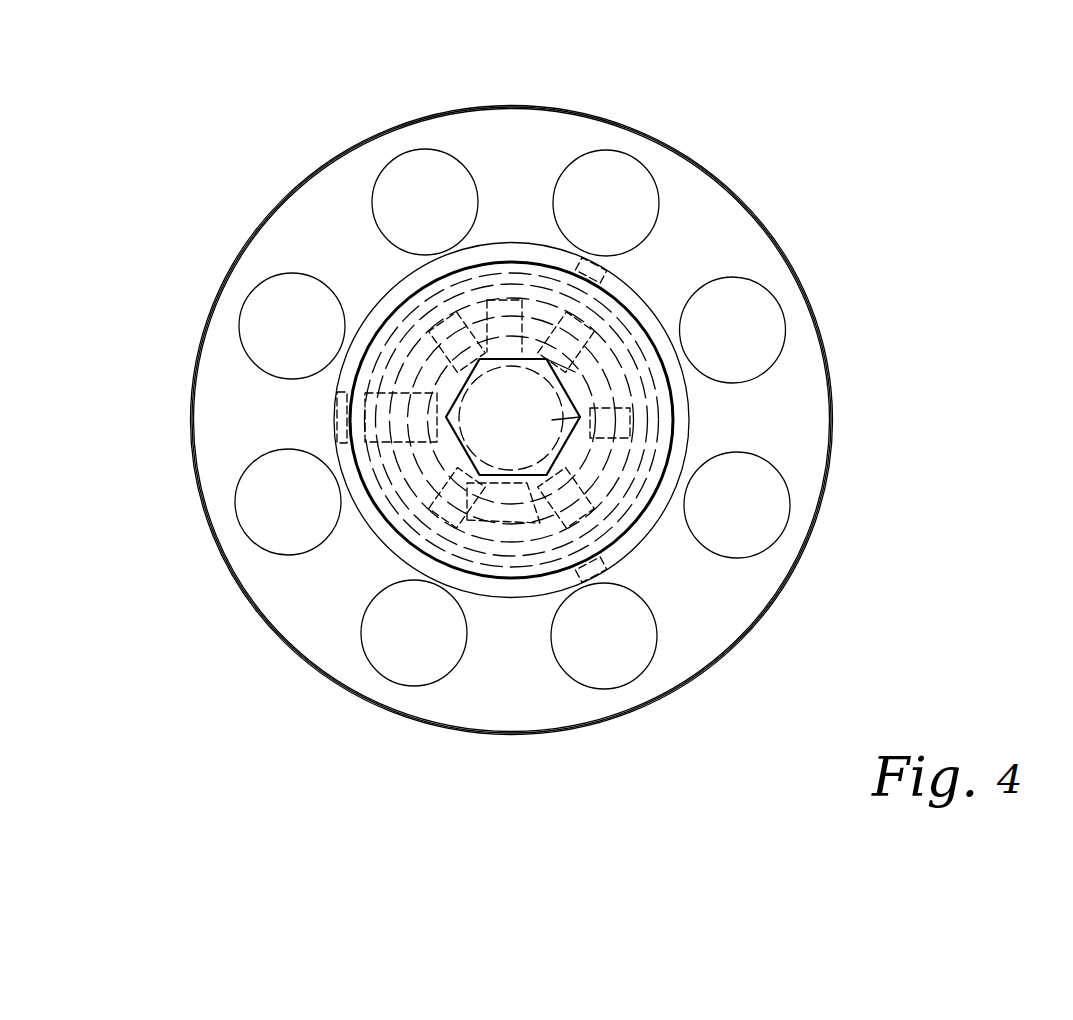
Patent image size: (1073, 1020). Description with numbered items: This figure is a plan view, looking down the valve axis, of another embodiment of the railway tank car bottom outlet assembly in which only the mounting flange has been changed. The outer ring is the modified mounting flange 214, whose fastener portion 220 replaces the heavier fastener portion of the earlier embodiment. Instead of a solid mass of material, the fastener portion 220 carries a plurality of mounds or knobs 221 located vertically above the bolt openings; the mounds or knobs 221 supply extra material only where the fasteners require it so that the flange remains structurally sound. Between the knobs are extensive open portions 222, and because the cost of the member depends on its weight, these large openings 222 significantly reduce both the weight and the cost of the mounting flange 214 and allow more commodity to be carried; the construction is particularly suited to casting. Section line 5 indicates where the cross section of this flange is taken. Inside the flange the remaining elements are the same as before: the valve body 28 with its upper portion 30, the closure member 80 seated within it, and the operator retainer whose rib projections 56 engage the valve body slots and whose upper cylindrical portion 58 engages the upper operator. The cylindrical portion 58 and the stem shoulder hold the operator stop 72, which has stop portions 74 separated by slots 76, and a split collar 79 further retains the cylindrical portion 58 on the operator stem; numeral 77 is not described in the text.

The mounting flange 214 is at (437, 108).
The fastener portion 220 is at (602, 732).
The valve body 28 is at (675, 580).
The mounds or knobs 221 is at (563, 672).
The open portions 222 is at (229, 432).
The upper portion 30 is at (652, 322).
The upper cylindrical portion 58 is at (510, 353).
The passage 77 is at (457, 322).
The split collar 79 is at (460, 355).
The operator stop 72 is at (555, 184).
The stop portions 74 is at (587, 452).
The outwardly directed projections 56 is at (615, 282).
The slots 76 is at (553, 355).
The closure member 80 is at (552, 420).
The section line 5- 5 is at (550, 290).